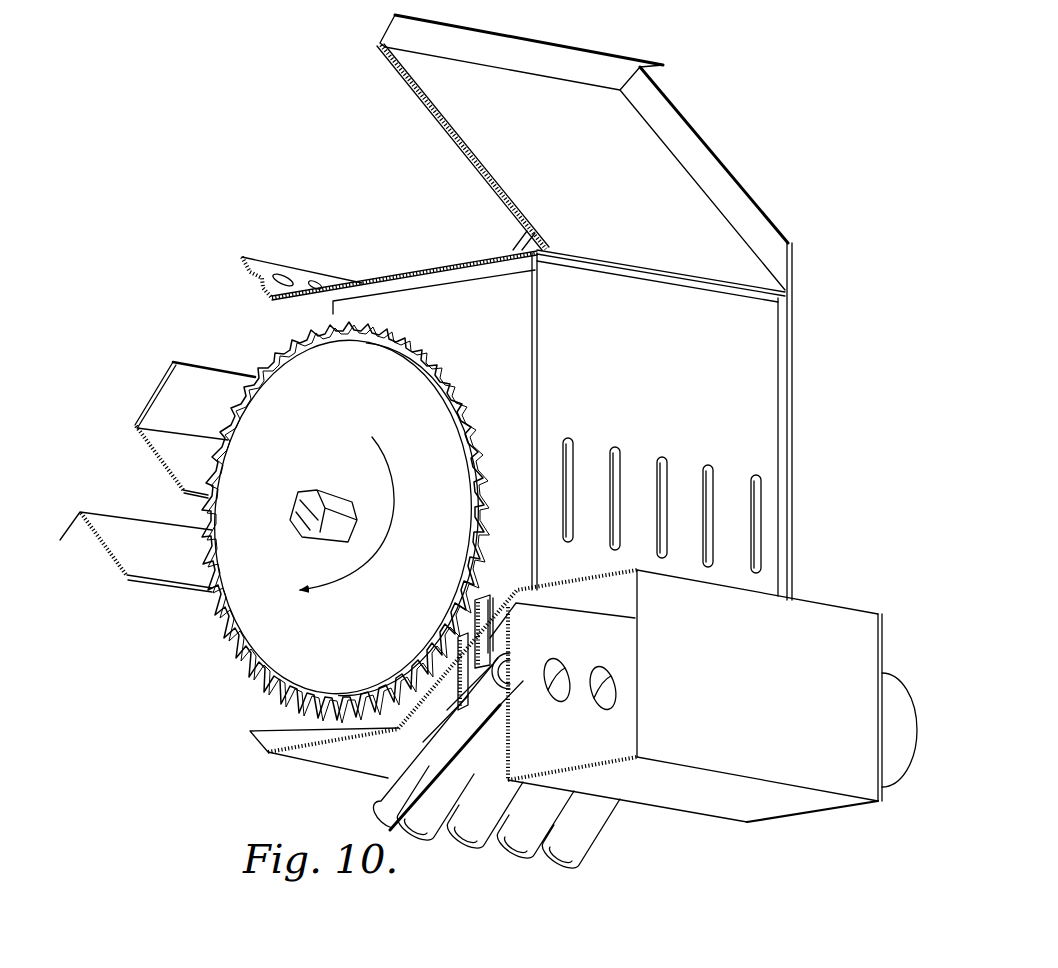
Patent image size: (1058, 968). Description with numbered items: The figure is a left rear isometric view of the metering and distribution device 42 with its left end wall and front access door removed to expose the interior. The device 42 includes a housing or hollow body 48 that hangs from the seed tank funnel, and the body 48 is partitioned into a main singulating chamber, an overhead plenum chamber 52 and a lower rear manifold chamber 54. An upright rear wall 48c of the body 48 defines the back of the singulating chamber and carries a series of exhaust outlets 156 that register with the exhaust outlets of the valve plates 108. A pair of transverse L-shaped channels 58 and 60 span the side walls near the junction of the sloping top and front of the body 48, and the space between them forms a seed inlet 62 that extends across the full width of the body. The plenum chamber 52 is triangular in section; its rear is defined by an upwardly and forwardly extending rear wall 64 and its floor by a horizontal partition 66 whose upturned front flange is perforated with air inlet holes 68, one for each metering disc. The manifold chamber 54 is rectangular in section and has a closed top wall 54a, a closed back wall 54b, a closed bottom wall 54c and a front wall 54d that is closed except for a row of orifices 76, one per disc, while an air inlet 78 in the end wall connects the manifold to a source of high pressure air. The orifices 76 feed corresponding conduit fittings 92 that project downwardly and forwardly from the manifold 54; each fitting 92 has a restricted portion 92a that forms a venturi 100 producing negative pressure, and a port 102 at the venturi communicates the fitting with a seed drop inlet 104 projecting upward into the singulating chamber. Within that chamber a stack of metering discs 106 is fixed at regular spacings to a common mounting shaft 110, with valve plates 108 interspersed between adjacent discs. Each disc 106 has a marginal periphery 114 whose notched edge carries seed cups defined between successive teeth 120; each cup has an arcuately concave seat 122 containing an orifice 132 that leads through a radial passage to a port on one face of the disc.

The metering and distribution device 42 is at (773, 180).
The housing or hollow body 48 is at (797, 337).
The upright rear wall 48c is at (745, 398).
The plenum chamber 52 is at (423, 123).
The manifold chamber 54 is at (825, 592).
The top wall 54a is at (595, 590).
The back wall 54b is at (855, 638).
The bottom wall 54c is at (745, 803).
The front wall 54d is at (557, 760).
The L-shaped channel 58 is at (142, 540).
The L-shaped channel 60 is at (200, 385).
The seed inlet 62 is at (153, 505).
The rear wall 64 is at (645, 155).
The horizontal partition 66 is at (395, 272).
The air inlet holes 68 is at (280, 273).
The orifices 76 is at (597, 670).
The air inlet 78 is at (893, 757).
The conduit fittings 92 is at (387, 798).
The restricted portion 92a is at (503, 743).
The venturi 100 is at (430, 753).
The port 102 is at (415, 670).
The seed drop inlet 104 is at (482, 612).
The metering discs 106 is at (433, 340).
The valve plates 108 is at (507, 350).
The common mounting shaft 110 is at (305, 512).
The marginal periphery 114 is at (410, 377).
The teeth 120 is at (405, 330).
The arcuately concave seat 122 is at (463, 387).
The orifice 132 is at (473, 437).
The exhaust outlets 156 is at (615, 448).